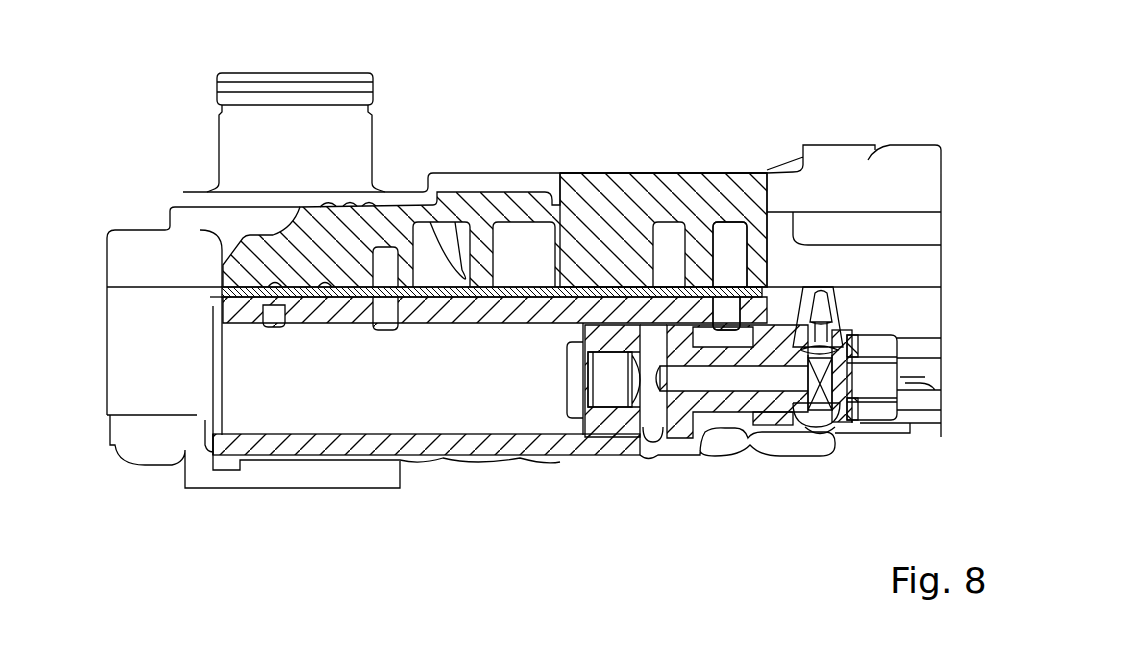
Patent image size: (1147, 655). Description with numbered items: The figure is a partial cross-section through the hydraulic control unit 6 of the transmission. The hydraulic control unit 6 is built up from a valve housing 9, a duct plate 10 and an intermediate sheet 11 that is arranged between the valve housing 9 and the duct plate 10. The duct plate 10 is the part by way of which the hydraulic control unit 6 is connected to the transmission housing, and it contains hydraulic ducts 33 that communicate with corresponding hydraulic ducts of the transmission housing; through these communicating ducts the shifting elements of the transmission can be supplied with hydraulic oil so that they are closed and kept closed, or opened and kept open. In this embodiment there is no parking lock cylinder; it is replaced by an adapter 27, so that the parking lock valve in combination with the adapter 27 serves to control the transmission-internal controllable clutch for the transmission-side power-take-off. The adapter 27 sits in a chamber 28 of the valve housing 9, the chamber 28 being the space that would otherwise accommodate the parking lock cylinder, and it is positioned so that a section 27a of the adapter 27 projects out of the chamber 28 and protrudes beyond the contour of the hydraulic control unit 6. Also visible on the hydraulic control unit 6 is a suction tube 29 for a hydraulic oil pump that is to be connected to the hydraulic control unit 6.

The hydraulic control unit 6 is at (745, 113).
The valve housing 9 is at (620, 445).
The duct plate 10 is at (640, 203).
The intermediate sheet 11 is at (540, 288).
The adapter 27 is at (555, 398).
The section of the adapter 27a is at (876, 372).
The chamber 28 is at (343, 380).
The suction tube 29 is at (265, 150).
The hydraulic ducts 33 is at (730, 247).